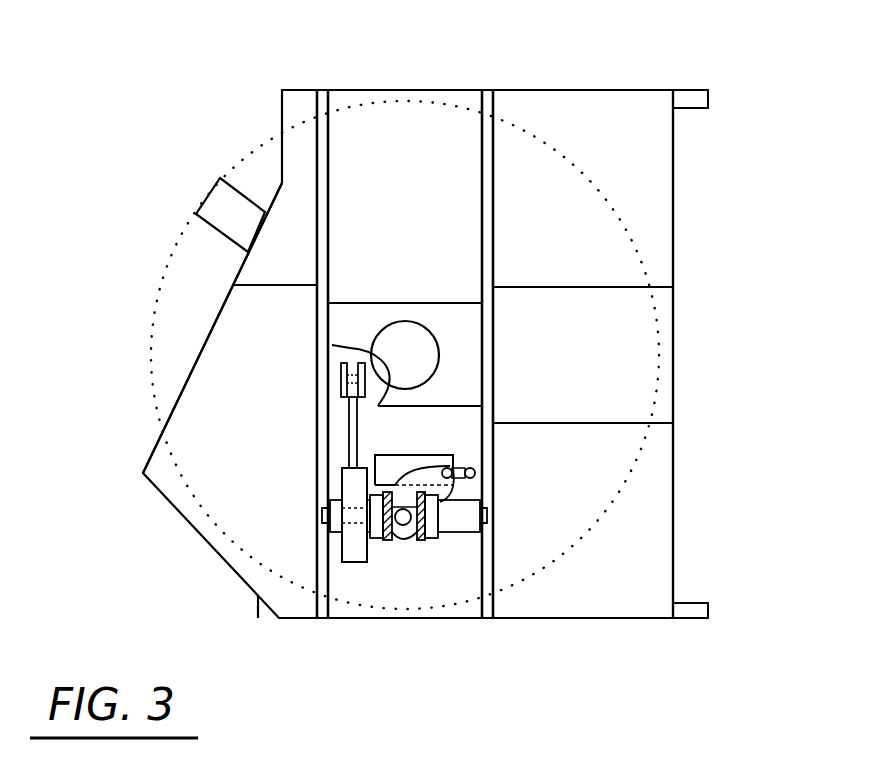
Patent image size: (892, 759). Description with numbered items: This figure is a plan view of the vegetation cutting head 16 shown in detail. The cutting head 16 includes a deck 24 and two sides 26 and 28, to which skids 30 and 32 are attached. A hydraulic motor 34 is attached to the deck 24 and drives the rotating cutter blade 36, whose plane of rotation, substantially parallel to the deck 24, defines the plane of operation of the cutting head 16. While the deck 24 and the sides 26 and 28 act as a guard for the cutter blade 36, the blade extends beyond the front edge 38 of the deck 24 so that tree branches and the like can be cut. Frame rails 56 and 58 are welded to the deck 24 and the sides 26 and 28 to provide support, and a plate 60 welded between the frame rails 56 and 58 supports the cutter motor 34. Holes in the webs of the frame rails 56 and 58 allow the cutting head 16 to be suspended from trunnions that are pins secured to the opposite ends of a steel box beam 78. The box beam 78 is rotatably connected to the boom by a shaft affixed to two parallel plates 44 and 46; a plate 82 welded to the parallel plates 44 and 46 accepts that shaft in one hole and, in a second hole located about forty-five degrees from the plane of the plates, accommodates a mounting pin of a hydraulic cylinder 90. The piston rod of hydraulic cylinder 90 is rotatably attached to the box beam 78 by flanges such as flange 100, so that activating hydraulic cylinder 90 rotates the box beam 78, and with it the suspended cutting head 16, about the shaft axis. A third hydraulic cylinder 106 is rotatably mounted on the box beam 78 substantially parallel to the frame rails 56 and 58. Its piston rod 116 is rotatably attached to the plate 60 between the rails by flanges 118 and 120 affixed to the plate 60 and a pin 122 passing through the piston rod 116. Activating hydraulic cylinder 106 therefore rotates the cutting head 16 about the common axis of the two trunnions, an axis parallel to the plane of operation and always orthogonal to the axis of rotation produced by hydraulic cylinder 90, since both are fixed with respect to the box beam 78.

The cutting head 16 is at (602, 110).
The deck 24 is at (627, 210).
The side 26 is at (633, 618).
The side 28 is at (380, 90).
The skid 30 is at (710, 610).
The skid 32 is at (708, 97).
The hydraulic motor 34 is at (395, 322).
The cutter blade 36 is at (197, 198).
The front edge 38 is at (197, 340).
The parallel plate 44 is at (390, 545).
The parallel plate 46 is at (423, 545).
The frame rail 56 is at (332, 188).
The frame rail 58 is at (480, 240).
The plate 60 is at (455, 387).
The box beam 78 is at (387, 545).
The plate 82 is at (440, 502).
The hydraulic cylinder 90 is at (306, 515).
The flange 100 is at (472, 488).
The hydraulic cylinder 106 is at (345, 563).
The piston rod 116 is at (349, 432).
The flange 118 is at (340, 363).
The flange 120 is at (456, 435).
The pin 122 is at (342, 380).